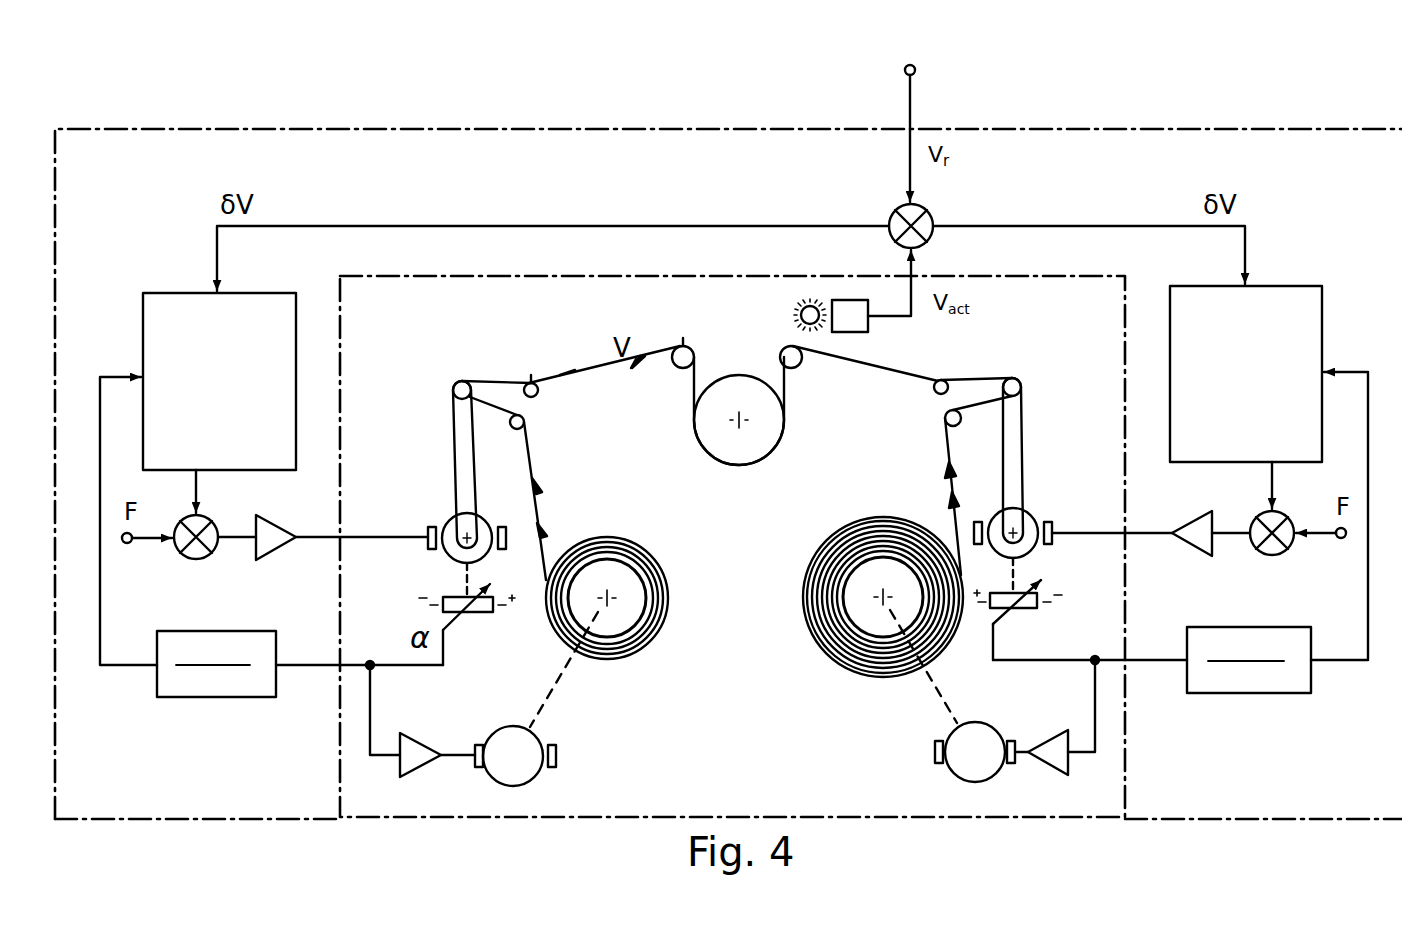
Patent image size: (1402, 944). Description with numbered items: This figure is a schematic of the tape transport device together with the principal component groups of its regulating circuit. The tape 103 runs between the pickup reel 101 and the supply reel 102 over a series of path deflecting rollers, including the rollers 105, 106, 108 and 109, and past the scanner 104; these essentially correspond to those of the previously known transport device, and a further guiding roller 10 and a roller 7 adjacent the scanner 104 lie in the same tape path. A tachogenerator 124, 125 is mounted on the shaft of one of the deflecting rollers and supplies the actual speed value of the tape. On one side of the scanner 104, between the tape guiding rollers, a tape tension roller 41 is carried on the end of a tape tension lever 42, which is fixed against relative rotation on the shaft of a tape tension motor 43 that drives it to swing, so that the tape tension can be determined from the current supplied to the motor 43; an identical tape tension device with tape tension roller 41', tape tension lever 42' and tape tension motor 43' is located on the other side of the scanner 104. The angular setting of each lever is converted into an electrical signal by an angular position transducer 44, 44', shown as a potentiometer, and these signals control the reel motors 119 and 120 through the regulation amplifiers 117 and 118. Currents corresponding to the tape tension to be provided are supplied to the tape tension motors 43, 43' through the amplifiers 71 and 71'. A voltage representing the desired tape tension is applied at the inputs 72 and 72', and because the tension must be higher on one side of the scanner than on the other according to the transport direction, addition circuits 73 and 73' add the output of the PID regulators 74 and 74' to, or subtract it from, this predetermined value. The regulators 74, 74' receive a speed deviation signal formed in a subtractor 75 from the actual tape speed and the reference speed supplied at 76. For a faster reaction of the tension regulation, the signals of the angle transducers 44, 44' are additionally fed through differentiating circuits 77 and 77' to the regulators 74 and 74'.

The guide roller 7 is at (795, 366).
The guide roller 10 is at (515, 430).
The tape tension roller 41 is at (432, 372).
The tape tension roller 41' is at (1035, 367).
The tape tension lever 42 is at (436, 464).
The tape tension lever 42' is at (1041, 460).
The tape tension motor 43 is at (450, 525).
The tape tension motor 43' is at (1028, 522).
The angle transducer 44 is at (456, 611).
The angular position transducer 44' is at (1035, 606).
The amplifier 71 is at (284, 524).
The amplifier 71' is at (1186, 519).
The input 72 is at (142, 555).
The input 72' is at (1329, 550).
The addition circuit 73 is at (207, 523).
The addition circuit 73' is at (1255, 519).
The regulator 74 is at (219, 366).
The regulator 74' is at (1250, 359).
The subtractor 75 is at (896, 210).
The reference value input 76 is at (913, 115).
The differentiating circuit 77 is at (217, 647).
The differentiating circuit 77' is at (1249, 643).
The pickup reel 101 is at (636, 645).
The supply reel 102 is at (828, 656).
The tape 103 is at (575, 390).
The scanner 104 is at (772, 433).
The path deflecting roller 105 is at (955, 427).
The path deflecting roller 106 is at (946, 379).
The path deflecting roller 108 is at (677, 341).
The tape guiding roller 109 is at (515, 374).
The regulation amplifier 117 is at (425, 768).
The regulation amplifier 118 is at (1058, 760).
The reel motor 119 is at (526, 772).
The reel motor 120 is at (964, 768).
The tachogenerator 124 is at (800, 306).
The tachogenerator 125 is at (860, 326).